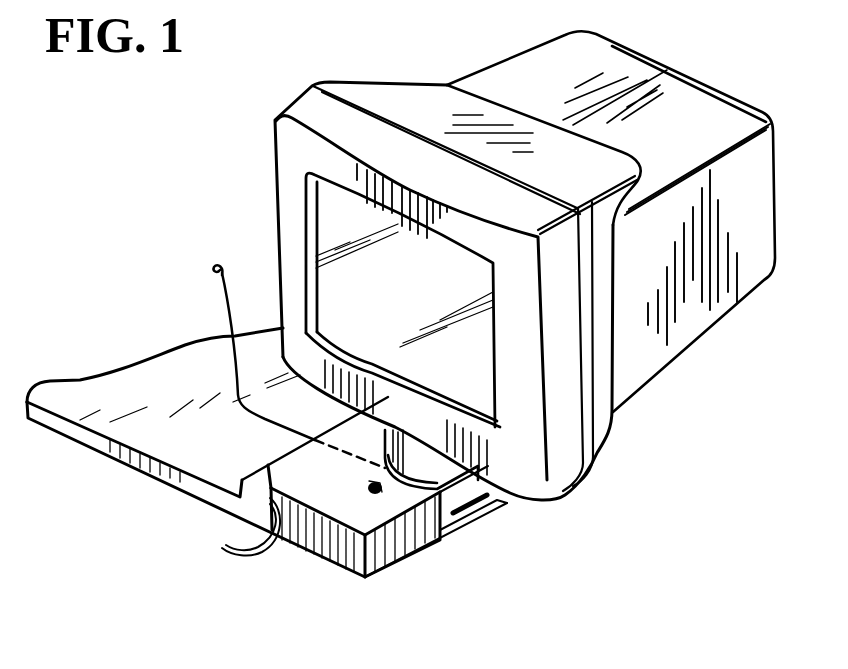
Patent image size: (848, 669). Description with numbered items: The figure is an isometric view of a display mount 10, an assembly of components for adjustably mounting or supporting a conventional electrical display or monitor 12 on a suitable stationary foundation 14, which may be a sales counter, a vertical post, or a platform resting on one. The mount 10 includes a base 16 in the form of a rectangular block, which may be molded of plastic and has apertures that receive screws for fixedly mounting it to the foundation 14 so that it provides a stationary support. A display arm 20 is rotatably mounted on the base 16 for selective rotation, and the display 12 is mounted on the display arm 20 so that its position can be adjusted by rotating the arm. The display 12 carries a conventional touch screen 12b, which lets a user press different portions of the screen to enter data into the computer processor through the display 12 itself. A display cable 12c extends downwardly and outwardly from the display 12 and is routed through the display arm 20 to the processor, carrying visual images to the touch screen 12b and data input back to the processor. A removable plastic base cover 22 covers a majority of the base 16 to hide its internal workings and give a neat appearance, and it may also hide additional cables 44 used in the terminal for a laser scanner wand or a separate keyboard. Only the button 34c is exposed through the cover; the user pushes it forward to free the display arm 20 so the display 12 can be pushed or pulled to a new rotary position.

The display mount 10 is at (443, 563).
The display 12 is at (688, 331).
The touch screen 12b is at (335, 220).
The display cable 12c is at (232, 300).
The foundation 14 is at (117, 388).
The base 16 is at (466, 503).
The display arm 20 is at (546, 507).
The base cover 22 is at (277, 463).
The button 34c is at (368, 485).
The additional cables 44 is at (224, 559).